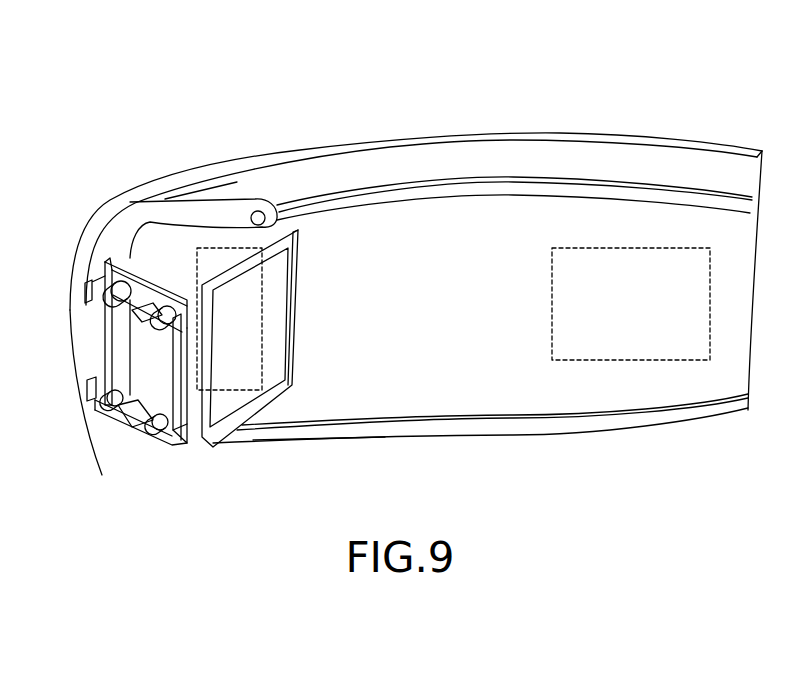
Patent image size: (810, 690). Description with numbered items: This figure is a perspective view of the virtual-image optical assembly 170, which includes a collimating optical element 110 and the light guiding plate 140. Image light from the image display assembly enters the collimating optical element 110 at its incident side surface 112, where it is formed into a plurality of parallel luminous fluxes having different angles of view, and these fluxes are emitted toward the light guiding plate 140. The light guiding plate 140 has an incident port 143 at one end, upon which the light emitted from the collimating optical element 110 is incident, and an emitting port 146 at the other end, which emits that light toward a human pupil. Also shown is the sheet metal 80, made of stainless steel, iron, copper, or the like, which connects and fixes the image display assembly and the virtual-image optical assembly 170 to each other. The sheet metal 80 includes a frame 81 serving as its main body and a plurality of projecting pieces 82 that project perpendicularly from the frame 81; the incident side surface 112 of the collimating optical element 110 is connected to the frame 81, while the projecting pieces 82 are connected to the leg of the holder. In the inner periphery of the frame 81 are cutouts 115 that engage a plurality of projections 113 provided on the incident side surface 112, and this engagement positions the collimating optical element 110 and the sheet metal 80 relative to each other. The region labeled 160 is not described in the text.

The virtual-image optical assembly 170 is at (146, 101).
The collimating optical element 110 is at (257, 277).
The upper housing wall 160 is at (456, 157).
The light guiding plate 140 is at (480, 390).
The emitting port 146 is at (633, 362).
The incident port 143 is at (263, 370).
The sheet metal 80 is at (105, 330).
The cutouts 115 is at (181, 318).
The frame 81 is at (110, 270).
The incident side surface 112 is at (130, 357).
The projecting pieces 82 is at (83, 293).
The projections 113 is at (100, 408).